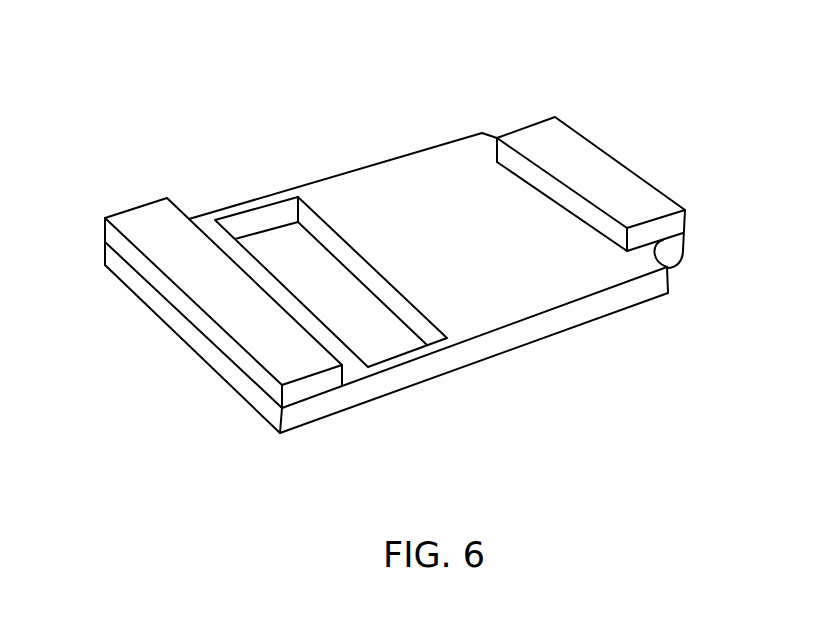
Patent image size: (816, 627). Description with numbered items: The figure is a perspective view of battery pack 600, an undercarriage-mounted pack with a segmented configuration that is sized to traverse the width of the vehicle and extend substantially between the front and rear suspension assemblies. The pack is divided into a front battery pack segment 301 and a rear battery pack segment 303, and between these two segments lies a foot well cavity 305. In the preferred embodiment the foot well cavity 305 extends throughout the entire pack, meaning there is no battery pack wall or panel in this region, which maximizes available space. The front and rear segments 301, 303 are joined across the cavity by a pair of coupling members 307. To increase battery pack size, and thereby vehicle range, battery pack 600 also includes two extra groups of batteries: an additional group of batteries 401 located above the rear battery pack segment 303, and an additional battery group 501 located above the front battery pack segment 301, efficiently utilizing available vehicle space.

The battery pack 600 is at (561, 98).
The front battery pack segment 301 is at (494, 238).
The rear battery pack segment 303 is at (334, 404).
The foot well cavity 305 is at (287, 236).
The coupling members 307 is at (252, 203).
The group of batteries 401 is at (254, 312).
The additional battery group 501 is at (618, 188).